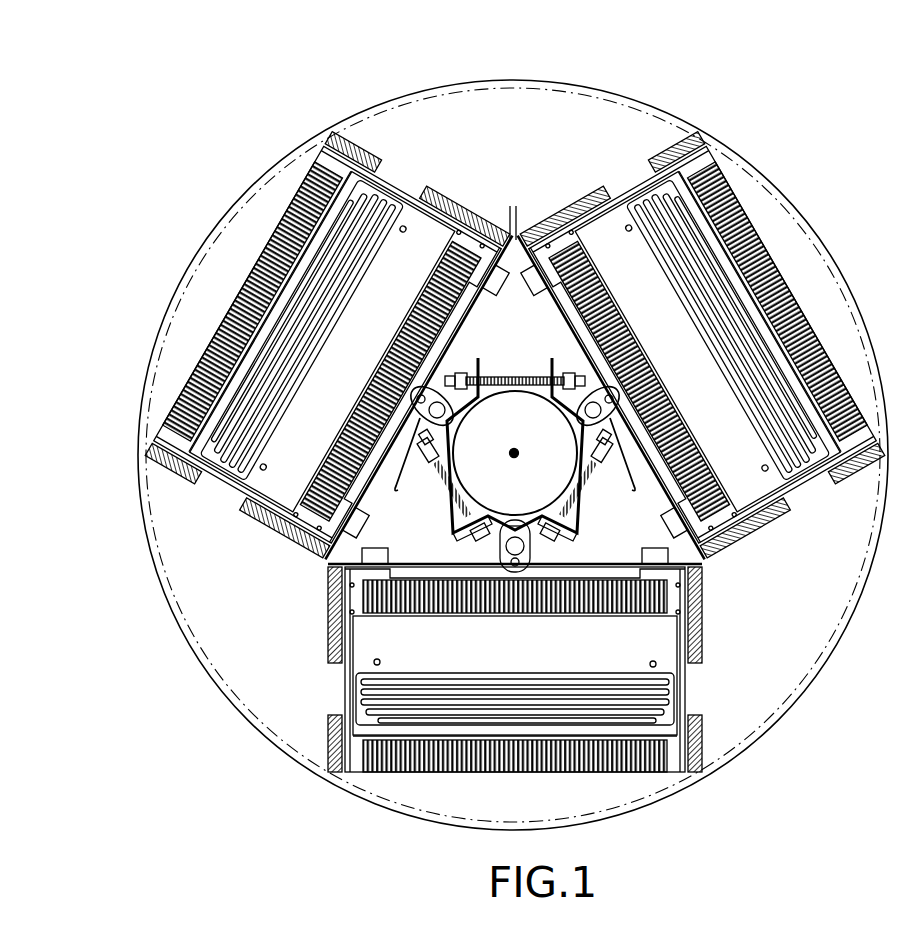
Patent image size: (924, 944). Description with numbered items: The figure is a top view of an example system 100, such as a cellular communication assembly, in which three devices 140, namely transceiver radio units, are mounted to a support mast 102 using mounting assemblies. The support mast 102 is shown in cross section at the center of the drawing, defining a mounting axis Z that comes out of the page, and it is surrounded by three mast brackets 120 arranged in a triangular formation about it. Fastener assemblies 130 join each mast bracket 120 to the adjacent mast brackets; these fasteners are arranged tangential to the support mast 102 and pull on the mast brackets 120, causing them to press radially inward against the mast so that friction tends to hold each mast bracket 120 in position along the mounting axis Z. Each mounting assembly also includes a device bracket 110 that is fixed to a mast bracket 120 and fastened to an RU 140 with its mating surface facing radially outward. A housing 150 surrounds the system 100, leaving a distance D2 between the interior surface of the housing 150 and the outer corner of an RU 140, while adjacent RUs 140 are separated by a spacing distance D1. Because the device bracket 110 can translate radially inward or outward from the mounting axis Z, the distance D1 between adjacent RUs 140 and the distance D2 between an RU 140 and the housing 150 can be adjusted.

The system 100 is at (181, 116).
The support mast 102 is at (590, 510).
The device bracket 110 is at (558, 329).
The mast bracket 120 is at (500, 547).
The fastener assembly 130 is at (580, 531).
The device 140 is at (420, 184).
The housing 150 is at (520, 81).
The spacing distance D1 is at (480, 216).
The distance D2 is at (182, 467).
The mounting axis Z is at (516, 451).